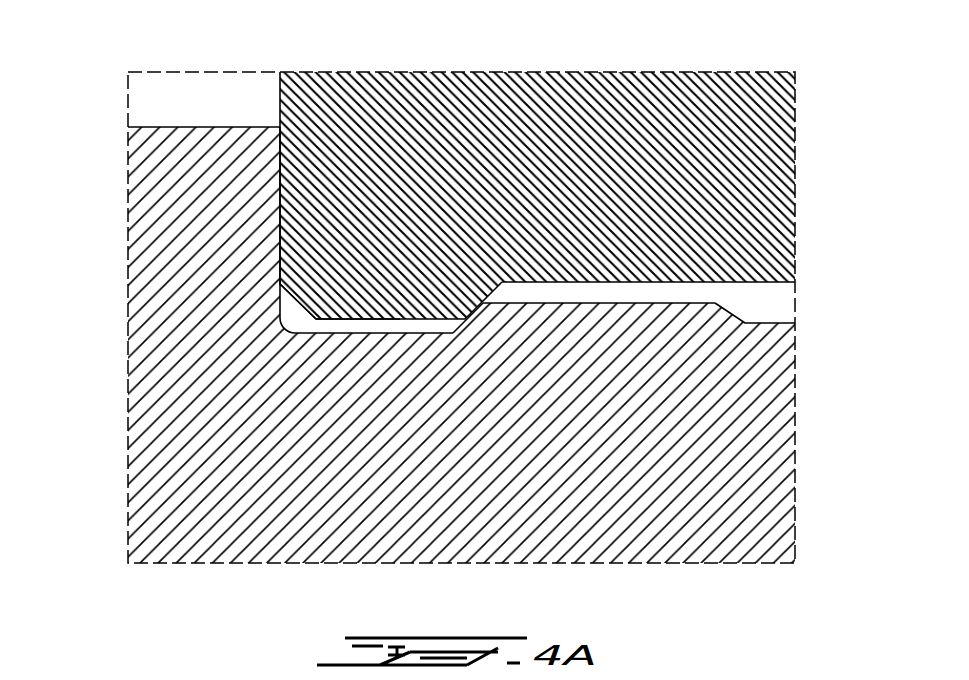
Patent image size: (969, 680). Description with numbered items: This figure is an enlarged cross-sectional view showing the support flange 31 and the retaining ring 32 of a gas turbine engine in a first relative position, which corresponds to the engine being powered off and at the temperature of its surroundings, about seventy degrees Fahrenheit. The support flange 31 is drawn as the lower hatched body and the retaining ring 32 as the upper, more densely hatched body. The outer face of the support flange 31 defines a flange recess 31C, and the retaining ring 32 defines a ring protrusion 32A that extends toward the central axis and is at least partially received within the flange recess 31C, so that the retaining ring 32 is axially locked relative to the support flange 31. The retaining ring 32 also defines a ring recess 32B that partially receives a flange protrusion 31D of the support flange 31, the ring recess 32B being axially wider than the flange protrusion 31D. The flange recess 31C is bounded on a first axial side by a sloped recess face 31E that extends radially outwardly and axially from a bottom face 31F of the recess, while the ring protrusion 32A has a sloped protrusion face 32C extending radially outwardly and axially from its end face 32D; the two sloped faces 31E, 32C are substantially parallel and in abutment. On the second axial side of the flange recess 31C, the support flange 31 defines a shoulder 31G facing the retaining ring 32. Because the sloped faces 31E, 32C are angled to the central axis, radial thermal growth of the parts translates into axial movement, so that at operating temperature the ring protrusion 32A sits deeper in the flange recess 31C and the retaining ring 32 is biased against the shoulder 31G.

The support flange 31 is at (146, 475).
The retaining ring 32 is at (740, 171).
The flange recess 31C is at (380, 350).
The flange protrusion 31D is at (593, 303).
The sloped recess face 31E is at (465, 316).
The bottom face 31F is at (330, 286).
The shoulder 31G is at (280, 187).
The ring protrusion 32A is at (393, 280).
The ring recess 32B is at (607, 279).
The sloped protrusion face 32C is at (487, 288).
The end face 32D is at (348, 333).